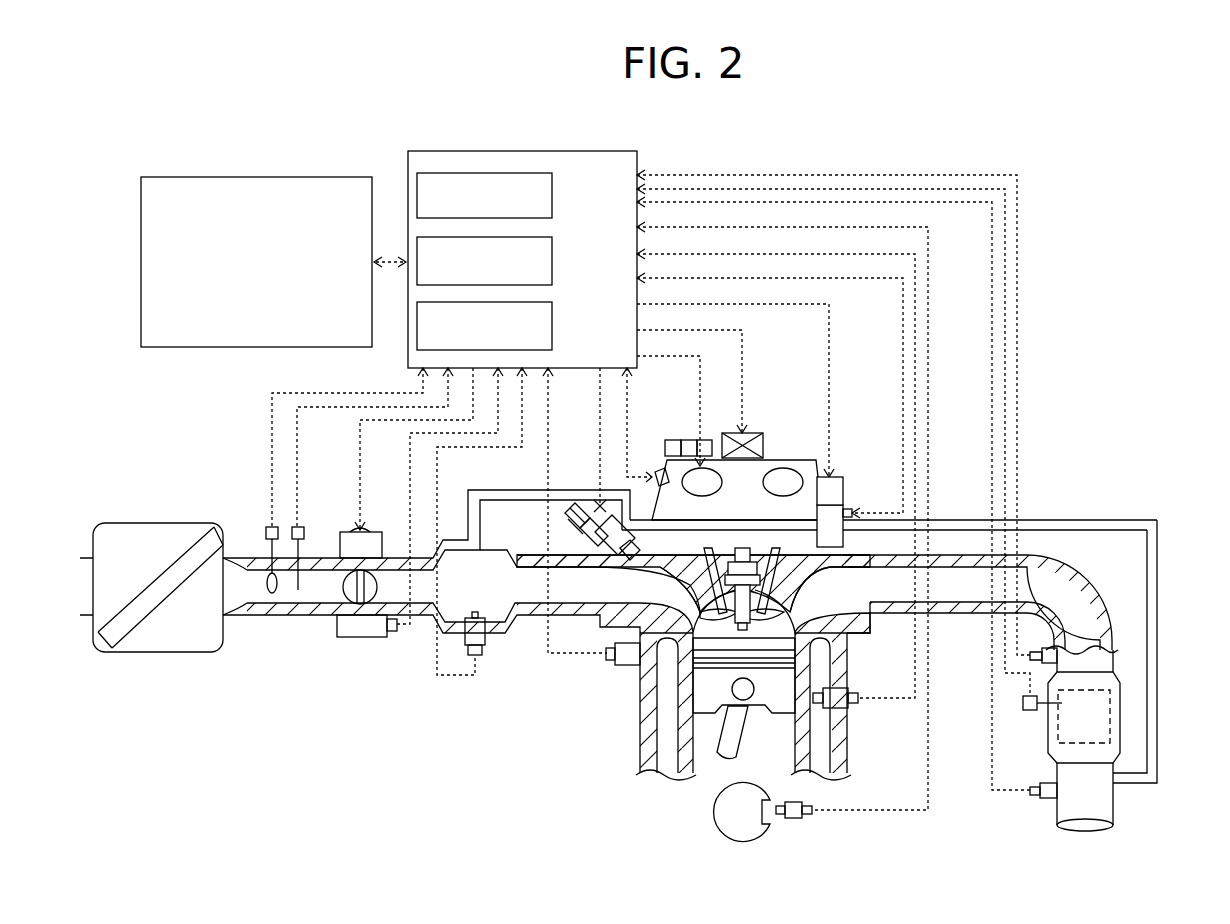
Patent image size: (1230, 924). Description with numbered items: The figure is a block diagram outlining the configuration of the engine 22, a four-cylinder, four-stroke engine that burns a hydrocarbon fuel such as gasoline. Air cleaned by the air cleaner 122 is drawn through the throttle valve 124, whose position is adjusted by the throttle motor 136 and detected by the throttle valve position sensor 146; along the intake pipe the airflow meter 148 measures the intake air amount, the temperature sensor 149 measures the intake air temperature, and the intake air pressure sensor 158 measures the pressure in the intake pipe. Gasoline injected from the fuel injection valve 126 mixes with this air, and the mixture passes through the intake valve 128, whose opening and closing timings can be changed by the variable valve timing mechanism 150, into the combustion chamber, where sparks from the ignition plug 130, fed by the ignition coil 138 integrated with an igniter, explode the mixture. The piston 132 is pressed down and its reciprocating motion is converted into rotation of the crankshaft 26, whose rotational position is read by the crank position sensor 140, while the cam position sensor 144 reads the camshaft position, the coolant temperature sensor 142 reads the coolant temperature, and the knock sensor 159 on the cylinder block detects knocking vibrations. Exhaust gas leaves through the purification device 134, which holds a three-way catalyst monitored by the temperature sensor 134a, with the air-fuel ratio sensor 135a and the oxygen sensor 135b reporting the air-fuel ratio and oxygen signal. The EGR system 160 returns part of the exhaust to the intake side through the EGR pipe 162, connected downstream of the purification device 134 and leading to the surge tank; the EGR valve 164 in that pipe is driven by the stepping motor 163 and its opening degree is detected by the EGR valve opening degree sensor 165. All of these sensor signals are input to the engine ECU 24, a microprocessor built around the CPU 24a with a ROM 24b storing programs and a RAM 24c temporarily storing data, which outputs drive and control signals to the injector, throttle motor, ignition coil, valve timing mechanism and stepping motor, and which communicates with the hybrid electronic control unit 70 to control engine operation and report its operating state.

The engine 22 is at (838, 427).
The engine ECU 24 is at (522, 232).
The CPU 24a is at (555, 195).
The ROM 24b is at (555, 262).
The RAM 24c is at (555, 325).
The crankshaft 26 is at (713, 808).
The hybrid electronic control unit 70 is at (262, 176).
The air cleaner 122 is at (175, 523).
The throttle valve 124 is at (380, 605).
The fuel injection valve 126 is at (585, 505).
The intake valve 128 is at (718, 605).
The ignition plug 130 is at (782, 600).
The piston 132 is at (705, 700).
The purification device 134 is at (1048, 735).
The temperature sensor 134a is at (1023, 700).
The air-fuel ratio sensor 135a is at (1030, 655).
The oxygen sensor 135b is at (1040, 793).
The throttle motor 136 is at (372, 530).
The ignition coil 138 is at (750, 428).
The crank position sensor 140 is at (792, 820).
The coolant temperature sensor 142 is at (845, 688).
The cam position sensor 144 is at (658, 470).
The throttle valve position sensor 146 is at (345, 637).
The airflow meter 148 is at (266, 530).
The temperature sensor 149 is at (304, 530).
The variable valve timing mechanism 150 is at (768, 458).
The intake air pressure sensor 158 is at (482, 645).
The knock sensor 159 is at (615, 665).
The EGR system 160 is at (1084, 497).
The EGR pipe 162 is at (1160, 660).
The stepping motor 163 is at (838, 478).
The EGR valve 164 is at (845, 540).
The EGR valve opening degree sensor 165 is at (852, 508).